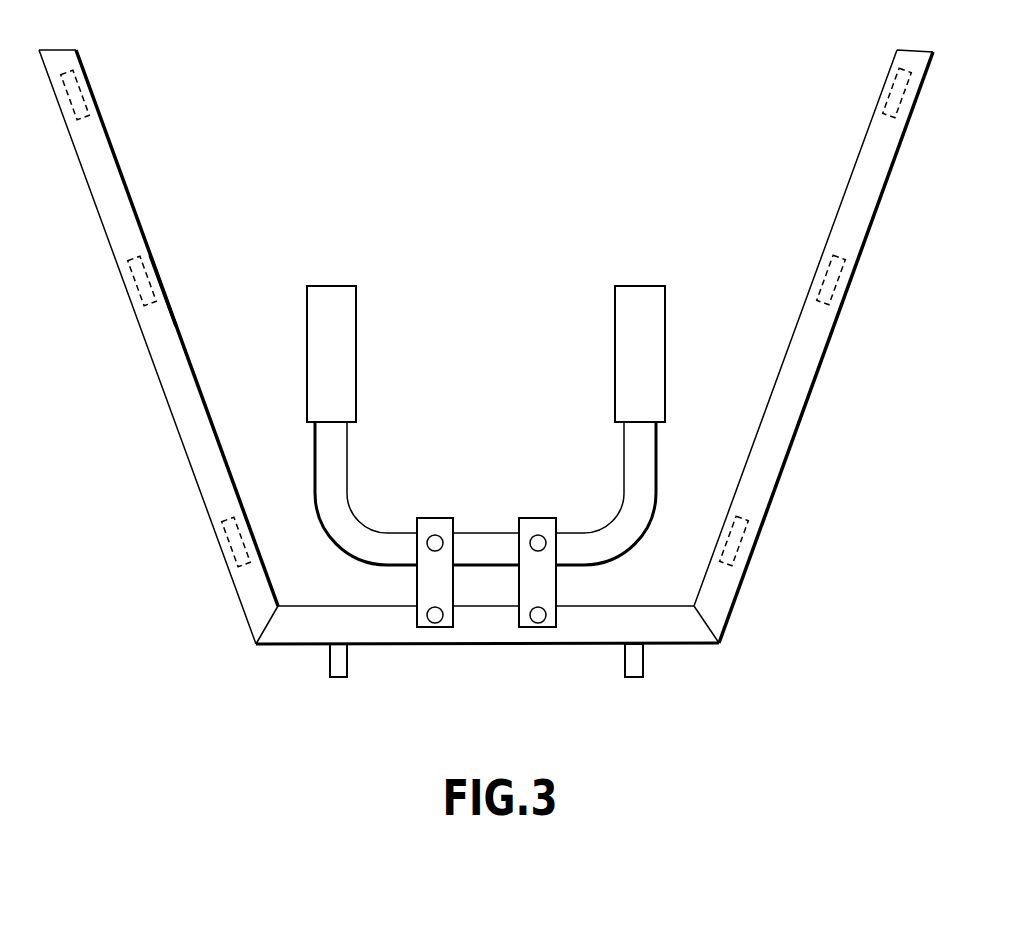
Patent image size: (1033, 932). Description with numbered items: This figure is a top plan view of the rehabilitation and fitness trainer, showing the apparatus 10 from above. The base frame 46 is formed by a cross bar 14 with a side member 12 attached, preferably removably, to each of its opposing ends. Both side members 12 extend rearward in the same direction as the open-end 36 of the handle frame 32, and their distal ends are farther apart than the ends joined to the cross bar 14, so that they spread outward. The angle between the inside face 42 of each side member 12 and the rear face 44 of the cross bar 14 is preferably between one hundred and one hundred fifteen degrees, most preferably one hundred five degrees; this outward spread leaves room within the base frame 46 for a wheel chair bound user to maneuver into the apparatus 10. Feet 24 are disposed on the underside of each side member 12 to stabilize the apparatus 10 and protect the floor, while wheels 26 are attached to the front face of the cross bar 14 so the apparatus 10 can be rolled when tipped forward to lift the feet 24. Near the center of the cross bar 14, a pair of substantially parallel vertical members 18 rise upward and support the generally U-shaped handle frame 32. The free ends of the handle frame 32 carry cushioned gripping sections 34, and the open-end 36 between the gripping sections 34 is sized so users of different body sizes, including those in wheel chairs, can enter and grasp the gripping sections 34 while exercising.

The apparatus 10 is at (486, 381).
The base side member 12 is at (92, 203).
The cross bar 14 is at (357, 632).
The vertical member 18 is at (440, 587).
The feet 24 is at (83, 95).
The wheel 26 is at (337, 680).
The handle frame 32 is at (488, 533).
The gripping section 34 is at (307, 302).
The open-end 36 is at (483, 397).
The inside face 42 is at (128, 187).
The rear face 44 is at (665, 605).
The base frame 46 is at (170, 300).